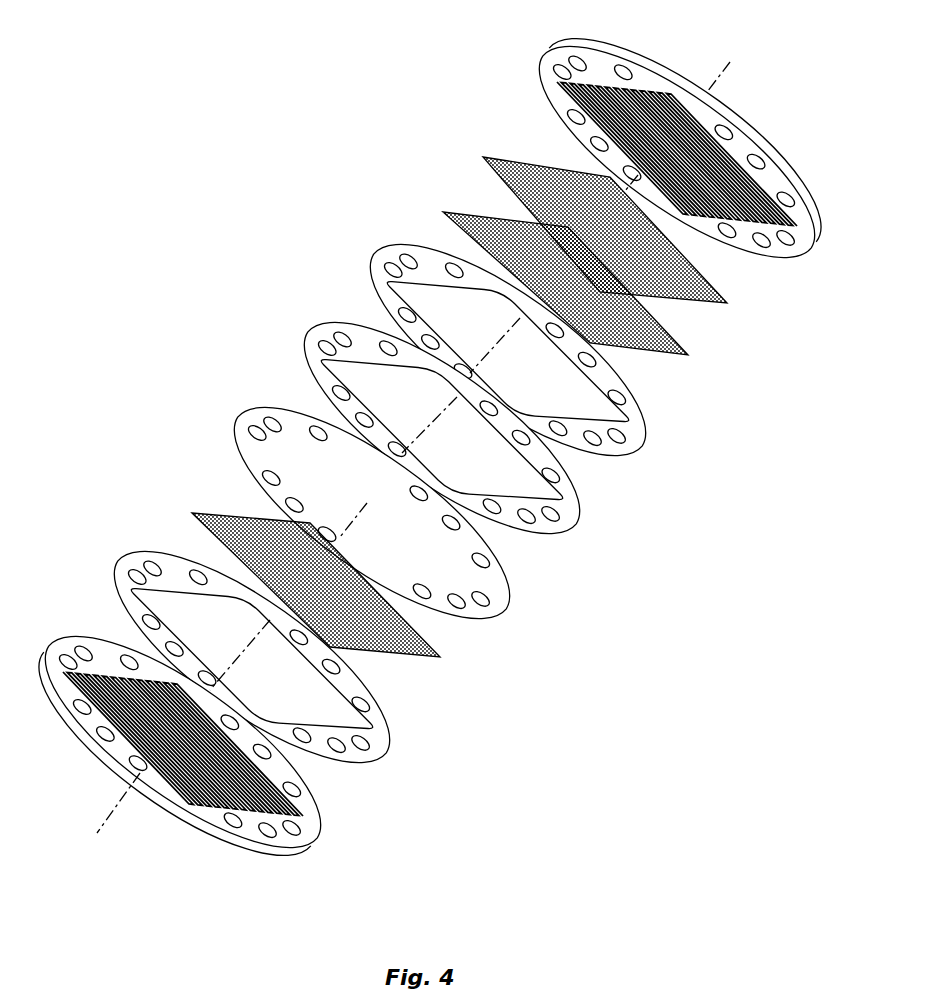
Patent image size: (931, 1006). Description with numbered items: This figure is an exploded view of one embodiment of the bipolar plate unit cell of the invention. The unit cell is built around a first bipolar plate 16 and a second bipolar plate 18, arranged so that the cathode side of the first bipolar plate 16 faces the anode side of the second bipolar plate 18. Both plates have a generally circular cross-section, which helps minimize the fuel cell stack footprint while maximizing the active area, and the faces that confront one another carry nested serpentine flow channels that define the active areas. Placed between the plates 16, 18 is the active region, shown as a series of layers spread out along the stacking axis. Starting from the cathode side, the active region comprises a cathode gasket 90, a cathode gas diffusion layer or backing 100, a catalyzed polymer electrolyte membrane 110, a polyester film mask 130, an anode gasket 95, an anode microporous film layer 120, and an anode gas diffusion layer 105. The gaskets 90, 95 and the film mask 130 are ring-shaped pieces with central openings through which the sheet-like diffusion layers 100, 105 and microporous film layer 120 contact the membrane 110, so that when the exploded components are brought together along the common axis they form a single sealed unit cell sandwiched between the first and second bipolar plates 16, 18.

The first bipolar plate 16 is at (310, 838).
The second bipolar plate 18 is at (546, 53).
The cathode gasket 90 is at (382, 752).
The anode gasket 95 is at (637, 448).
The cathode gas diffusion layer 100 is at (440, 657).
The anode gas diffusion layer 105 is at (727, 302).
The catalyzed polymer electrolyte membrane 110 is at (242, 423).
The anode microporous film layer 120 is at (687, 353).
The polyester film mask 130 is at (315, 345).